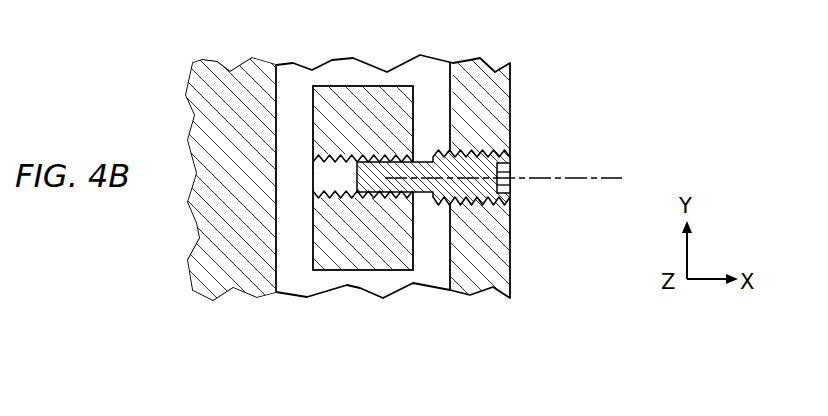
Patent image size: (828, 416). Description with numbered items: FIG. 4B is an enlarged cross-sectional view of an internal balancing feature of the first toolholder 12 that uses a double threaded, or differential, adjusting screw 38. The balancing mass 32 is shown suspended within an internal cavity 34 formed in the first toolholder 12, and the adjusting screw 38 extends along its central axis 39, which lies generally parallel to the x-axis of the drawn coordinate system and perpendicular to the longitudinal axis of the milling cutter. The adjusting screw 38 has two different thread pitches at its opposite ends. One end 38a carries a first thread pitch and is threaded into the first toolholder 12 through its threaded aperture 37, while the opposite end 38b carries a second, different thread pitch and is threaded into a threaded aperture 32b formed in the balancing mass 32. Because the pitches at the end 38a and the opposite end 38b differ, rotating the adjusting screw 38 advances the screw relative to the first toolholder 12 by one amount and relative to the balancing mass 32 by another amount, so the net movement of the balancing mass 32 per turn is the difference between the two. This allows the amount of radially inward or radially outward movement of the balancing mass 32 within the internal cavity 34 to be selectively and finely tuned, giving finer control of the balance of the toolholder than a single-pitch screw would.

The first toolholder 12 is at (487, 100).
The balancing mass 32 is at (340, 102).
The threaded aperture 32b is at (382, 193).
The internal cavity 34 is at (272, 105).
The threaded aperture 37 is at (488, 197).
The adjusting screw 38 is at (466, 131).
The one end 38a is at (462, 168).
The opposite end 38b is at (374, 170).
The central axis 39 is at (575, 178).